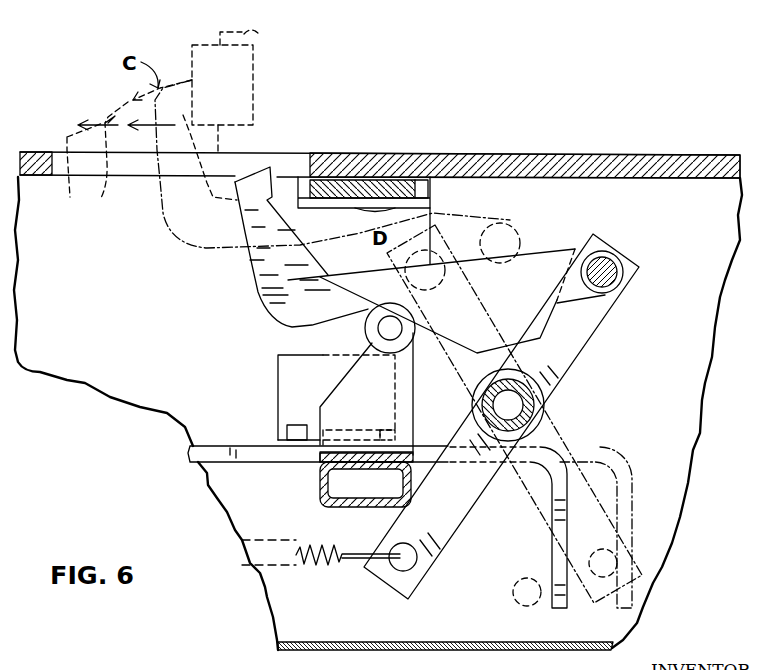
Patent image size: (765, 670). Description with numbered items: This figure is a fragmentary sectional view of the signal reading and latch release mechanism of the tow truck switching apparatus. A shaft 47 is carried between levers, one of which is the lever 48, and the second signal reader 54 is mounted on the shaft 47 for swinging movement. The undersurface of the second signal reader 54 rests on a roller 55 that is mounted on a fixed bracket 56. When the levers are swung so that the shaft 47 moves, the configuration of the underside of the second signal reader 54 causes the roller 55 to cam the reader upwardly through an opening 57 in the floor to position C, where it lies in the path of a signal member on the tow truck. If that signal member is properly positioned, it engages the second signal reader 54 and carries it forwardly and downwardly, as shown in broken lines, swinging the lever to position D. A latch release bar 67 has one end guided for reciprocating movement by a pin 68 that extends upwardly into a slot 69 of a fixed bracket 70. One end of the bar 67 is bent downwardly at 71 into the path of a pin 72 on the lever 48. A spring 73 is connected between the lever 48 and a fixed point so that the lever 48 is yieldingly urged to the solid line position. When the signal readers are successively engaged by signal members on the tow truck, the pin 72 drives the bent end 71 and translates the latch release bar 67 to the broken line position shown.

The shaft 47 is at (617, 282).
The lever 48 is at (573, 344).
The second signal reader 54 is at (280, 310).
The roller 55 is at (372, 331).
The fixed bracket 56 is at (398, 384).
The opening 57 is at (288, 158).
The latch release bar 67 is at (207, 443).
The pin 68 is at (287, 441).
The slot 69 is at (340, 412).
The fixed bracket 70 is at (288, 376).
The downwardly bent end 71 is at (562, 529).
The pin 72 is at (418, 558).
The spring 73 is at (307, 570).